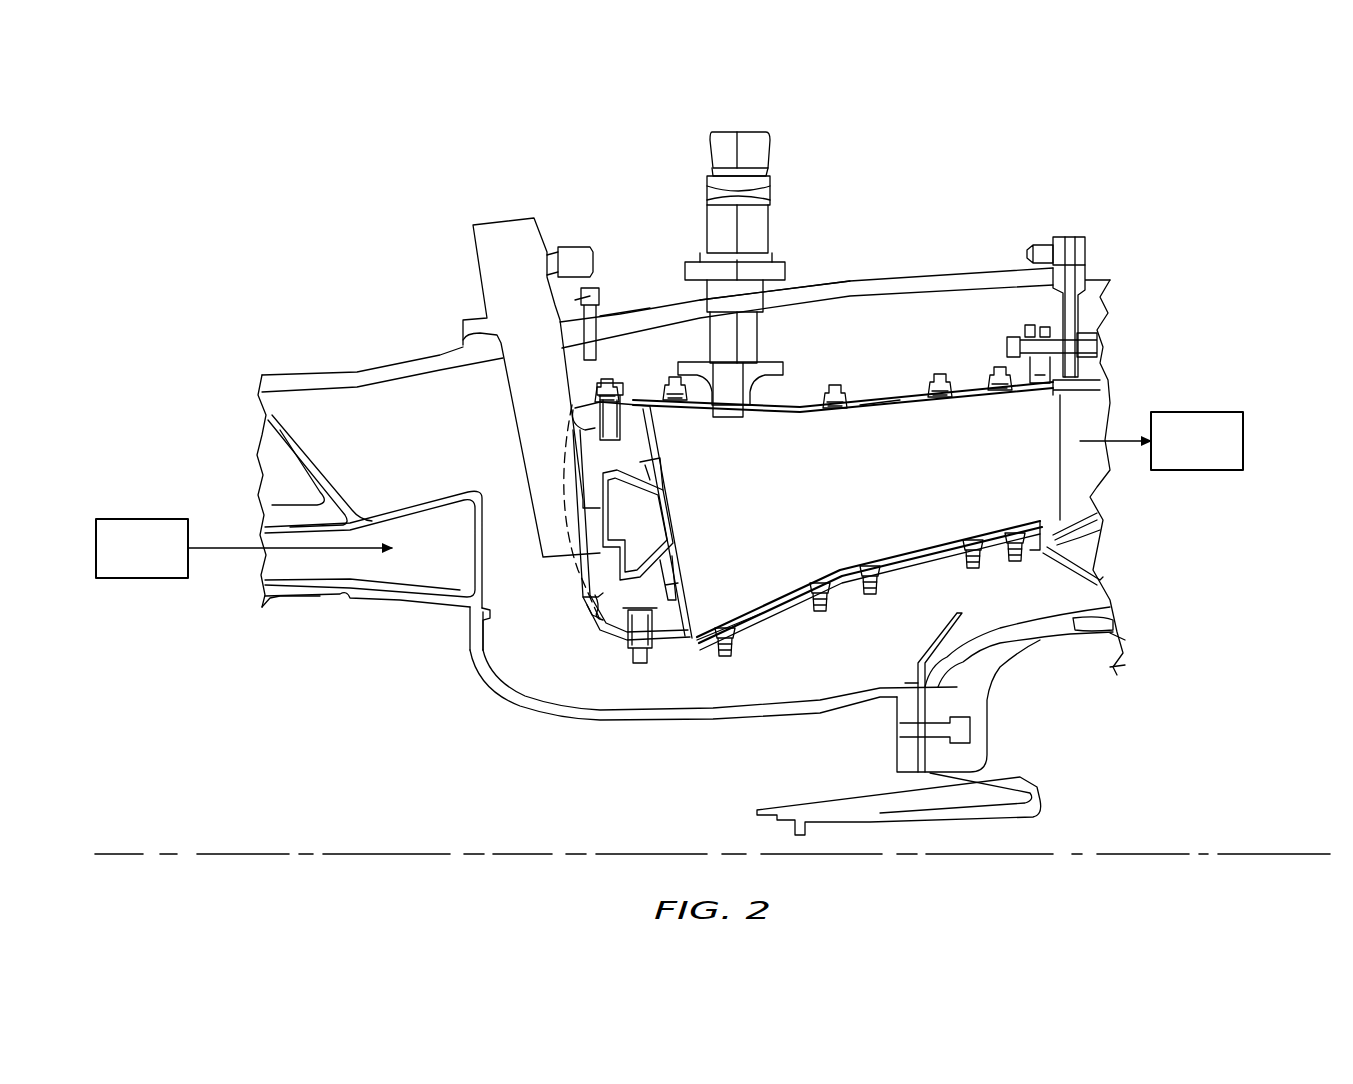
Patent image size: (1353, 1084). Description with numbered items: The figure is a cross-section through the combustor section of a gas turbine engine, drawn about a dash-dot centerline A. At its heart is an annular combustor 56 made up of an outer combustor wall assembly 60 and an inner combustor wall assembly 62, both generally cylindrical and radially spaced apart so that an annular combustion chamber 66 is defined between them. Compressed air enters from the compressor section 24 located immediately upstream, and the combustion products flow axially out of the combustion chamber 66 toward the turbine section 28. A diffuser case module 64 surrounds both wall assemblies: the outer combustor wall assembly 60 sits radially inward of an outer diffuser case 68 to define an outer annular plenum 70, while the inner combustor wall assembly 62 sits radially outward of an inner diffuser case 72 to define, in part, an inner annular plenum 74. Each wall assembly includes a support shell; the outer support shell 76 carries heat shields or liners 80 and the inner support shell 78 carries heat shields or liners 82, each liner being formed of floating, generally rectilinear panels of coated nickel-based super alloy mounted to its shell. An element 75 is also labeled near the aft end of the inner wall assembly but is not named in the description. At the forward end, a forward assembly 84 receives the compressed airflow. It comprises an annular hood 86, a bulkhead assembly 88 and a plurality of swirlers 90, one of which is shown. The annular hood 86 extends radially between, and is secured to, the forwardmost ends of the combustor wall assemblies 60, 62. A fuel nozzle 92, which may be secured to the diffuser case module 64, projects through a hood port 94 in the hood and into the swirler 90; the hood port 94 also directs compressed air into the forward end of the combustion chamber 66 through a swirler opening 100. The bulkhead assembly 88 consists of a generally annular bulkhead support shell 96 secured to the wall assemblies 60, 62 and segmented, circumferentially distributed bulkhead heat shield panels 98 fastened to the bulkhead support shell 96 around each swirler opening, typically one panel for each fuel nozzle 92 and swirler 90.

The compressor section 24 is at (156, 564).
The turbine section 28 is at (1211, 457).
The annular combustor 56 is at (988, 182).
The outer combustor wall assembly 60 is at (900, 384).
The inner combustor wall assembly 62 is at (848, 606).
The diffuser case module 64 is at (895, 268).
The annular combustion chamber 66 is at (885, 485).
The outer diffuser case 68 is at (823, 281).
The outer annular plenum 70 is at (835, 338).
The inner diffuser case 72 is at (712, 719).
The inner annular plenum 74 is at (801, 659).
The aft flange 75 is at (1020, 560).
The support shell 76 is at (866, 393).
The support shell 78 is at (940, 564).
The heat shield or liner 80 is at (760, 408).
The heat shield or liner 82 is at (770, 598).
The forward assembly 84 is at (583, 652).
The annular hood 86 is at (590, 617).
The bulkhead assembly 88 is at (665, 460).
The swirler 90 is at (678, 557).
The fuel nozzle 92 is at (543, 362).
The hood port 94 is at (583, 587).
The bulkhead support shell 96 is at (598, 630).
The bulkhead heat shield or panel 98 is at (680, 585).
The swirler opening 100 is at (670, 518).
The engine central longitudinal axis A is at (1078, 854).